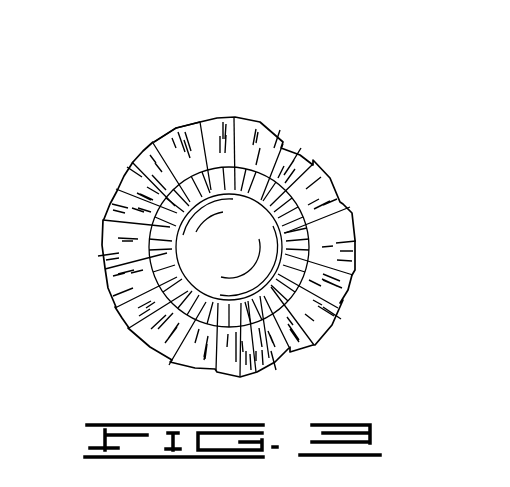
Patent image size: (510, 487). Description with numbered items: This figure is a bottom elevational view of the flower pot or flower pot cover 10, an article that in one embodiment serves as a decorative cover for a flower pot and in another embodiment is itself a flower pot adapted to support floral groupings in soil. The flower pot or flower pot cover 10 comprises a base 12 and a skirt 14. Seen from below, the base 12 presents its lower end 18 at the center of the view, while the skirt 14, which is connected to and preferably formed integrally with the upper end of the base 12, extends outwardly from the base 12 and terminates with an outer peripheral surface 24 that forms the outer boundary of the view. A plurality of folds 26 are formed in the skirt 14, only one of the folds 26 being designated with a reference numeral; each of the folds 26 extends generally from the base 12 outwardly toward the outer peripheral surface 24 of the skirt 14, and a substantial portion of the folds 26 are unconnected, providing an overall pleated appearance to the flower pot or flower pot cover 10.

The flower pot or flower pot cover 10 is at (240, 221).
The base 12 is at (275, 243).
The skirt 14 is at (227, 221).
The lower end 18 is at (197, 245).
The outer peripheral surface 24 is at (185, 127).
The folds 26 is at (225, 128).